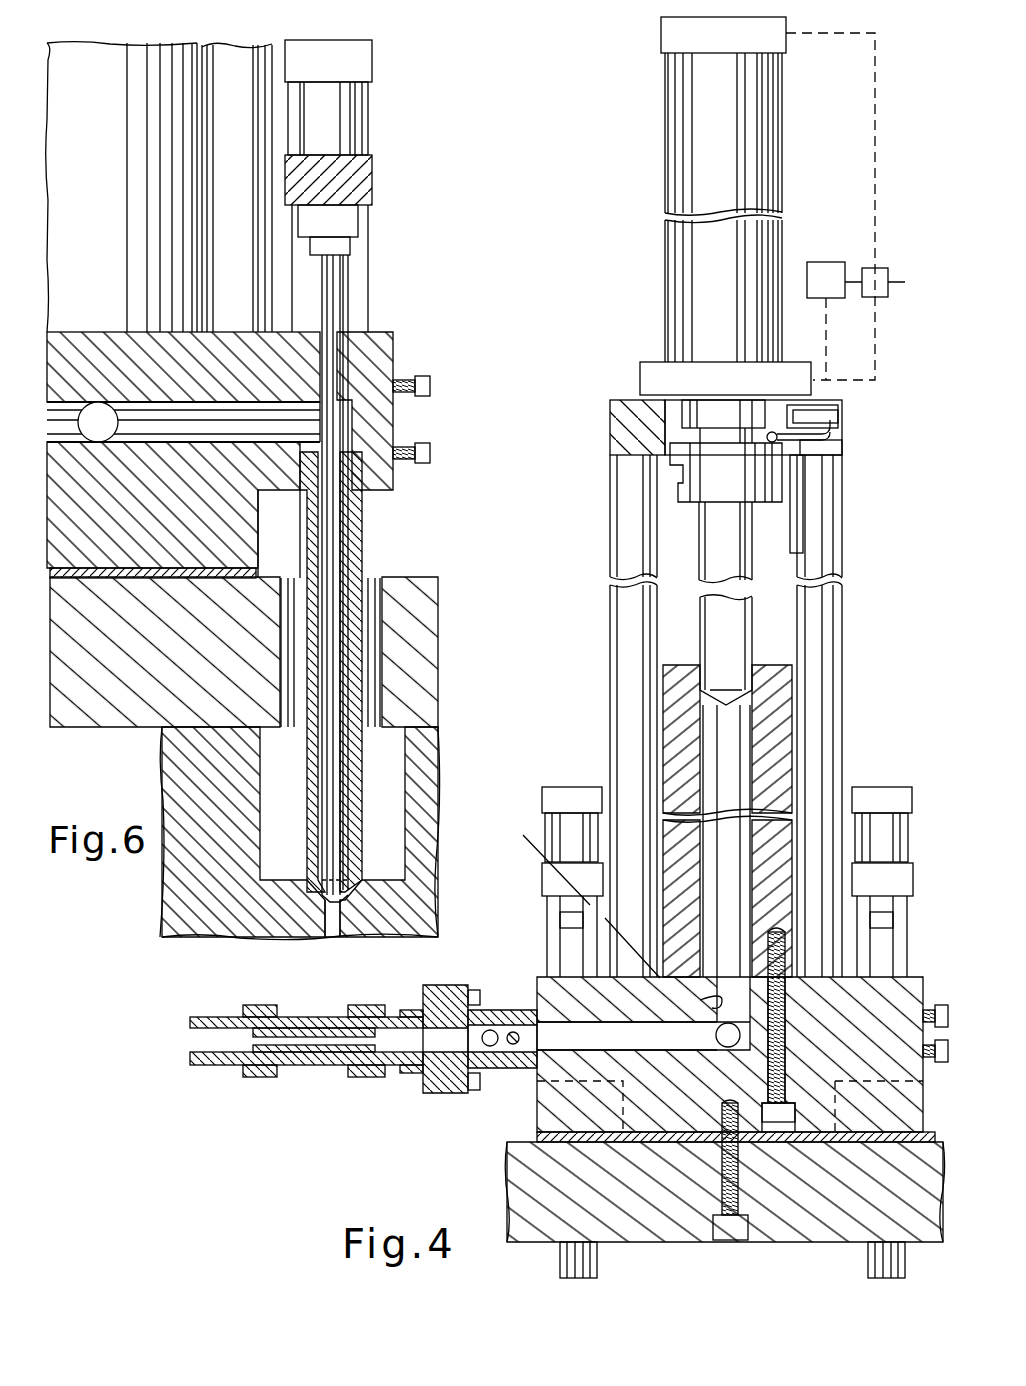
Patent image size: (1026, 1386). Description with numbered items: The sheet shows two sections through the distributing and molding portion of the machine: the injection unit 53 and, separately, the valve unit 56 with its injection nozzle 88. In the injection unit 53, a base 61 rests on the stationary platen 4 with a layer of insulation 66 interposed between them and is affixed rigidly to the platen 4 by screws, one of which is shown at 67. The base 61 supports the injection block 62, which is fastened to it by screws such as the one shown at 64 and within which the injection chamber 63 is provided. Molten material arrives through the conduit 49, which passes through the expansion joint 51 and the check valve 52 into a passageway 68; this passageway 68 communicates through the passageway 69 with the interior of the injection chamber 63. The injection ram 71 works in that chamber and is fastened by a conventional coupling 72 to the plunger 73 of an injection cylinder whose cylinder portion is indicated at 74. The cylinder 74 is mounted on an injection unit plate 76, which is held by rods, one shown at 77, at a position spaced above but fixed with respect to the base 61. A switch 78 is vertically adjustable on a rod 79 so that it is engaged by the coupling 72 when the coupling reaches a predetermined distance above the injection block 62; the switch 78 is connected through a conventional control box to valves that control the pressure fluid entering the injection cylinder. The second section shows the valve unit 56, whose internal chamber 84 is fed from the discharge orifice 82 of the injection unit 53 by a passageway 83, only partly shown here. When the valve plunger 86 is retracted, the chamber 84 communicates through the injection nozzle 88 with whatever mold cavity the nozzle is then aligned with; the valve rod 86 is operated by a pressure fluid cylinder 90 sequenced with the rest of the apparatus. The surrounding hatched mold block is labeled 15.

In FIG. 6, the platen 4 is at (112, 710).
In FIG. 4, the platen 4 is at (668, 1210).
In FIG. 6, the mold block 15 is at (165, 767).
In FIG. 4, the conduit 49 is at (218, 1018).
In FIG. 4, the expansion joint 51 is at (318, 1020).
In FIG. 4, the check valve 52 is at (488, 1030).
In FIG. 4, the injection unit 53 is at (793, 255).
In FIG. 6, the valve unit 56 is at (376, 108).
In FIG. 4, the base 61 is at (915, 985).
In FIG. 6, the block 62 is at (157, 55).
In FIG. 4, the block 62 is at (773, 715).
In FIG. 4, the injection chamber 63 is at (745, 755).
In FIG. 4, the screw 64 is at (782, 1060).
In FIG. 4, the layer of insulation 66 is at (928, 1125).
In FIG. 4, the screw 67 is at (735, 1178).
In FIG. 4, the passageway 68 is at (545, 985).
In FIG. 4, the passageway 69 is at (700, 1000).
In FIG. 4, the injection ram 71 is at (740, 622).
In FIG. 4, the coupling 72 is at (767, 478).
In FIG. 4, the plunger 73 is at (713, 435).
In FIG. 4, the cylinder 74 is at (746, 105).
In FIG. 4, the injection unit plate 76 is at (618, 423).
In FIG. 6, the rod 77 is at (258, 55).
In FIG. 4, the rod 77 is at (828, 493).
In FIG. 4, the switch 78 is at (822, 418).
In FIG. 4, the rod 79 is at (798, 518).
In FIG. 6, the discharge orifice 82 is at (98, 402).
In FIG. 4, the discharge orifice 82 is at (718, 1048).
In FIG. 6, the passageway 83 is at (245, 405).
In FIG. 6, the internal chamber 84 is at (350, 552).
In FIG. 6, the valve plunger 86 is at (333, 522).
In FIG. 6, the injection nozzle 88 is at (370, 895).
In FIG. 6, the pressure fluid cylinder 90 is at (355, 135).